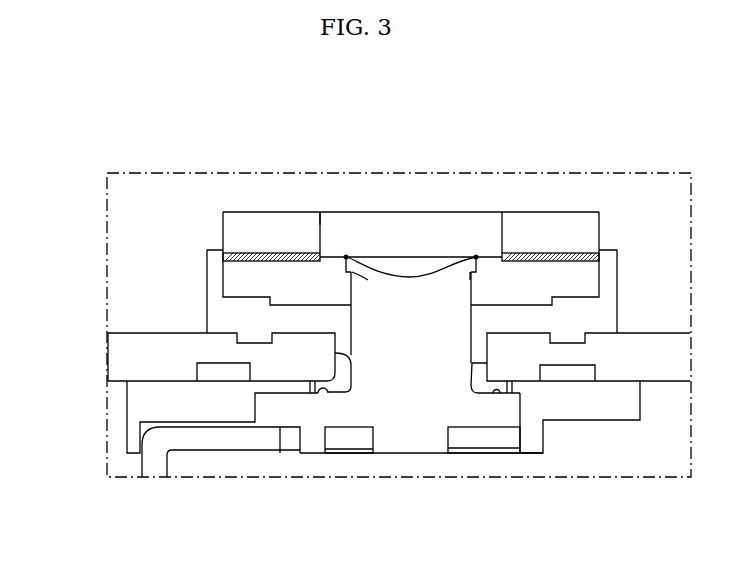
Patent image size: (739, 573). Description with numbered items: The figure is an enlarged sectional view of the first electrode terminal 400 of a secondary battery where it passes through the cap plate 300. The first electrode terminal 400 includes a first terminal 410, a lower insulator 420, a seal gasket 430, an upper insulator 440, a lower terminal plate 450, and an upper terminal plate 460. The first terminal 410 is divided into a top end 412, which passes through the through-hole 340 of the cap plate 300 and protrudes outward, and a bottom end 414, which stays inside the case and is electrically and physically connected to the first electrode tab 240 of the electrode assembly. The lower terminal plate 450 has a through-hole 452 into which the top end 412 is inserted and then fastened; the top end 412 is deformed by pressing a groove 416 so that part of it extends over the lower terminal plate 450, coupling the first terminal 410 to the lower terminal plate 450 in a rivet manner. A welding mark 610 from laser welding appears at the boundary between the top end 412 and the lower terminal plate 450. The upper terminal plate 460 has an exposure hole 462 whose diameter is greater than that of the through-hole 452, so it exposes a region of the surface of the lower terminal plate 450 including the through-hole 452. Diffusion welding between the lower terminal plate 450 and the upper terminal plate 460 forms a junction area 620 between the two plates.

The first electrode terminal 400 is at (203, 242).
The first terminal 410 is at (542, 119).
The top end 412 is at (445, 283).
The bottom end 414 is at (415, 417).
The groove 416 is at (420, 275).
The lower insulator 420 is at (137, 402).
The seal gasket 430 is at (342, 383).
The upper insulator 440 is at (215, 308).
The lower terminal plate 450 is at (232, 278).
The through-hole 452 is at (376, 270).
The upper terminal plate 460 is at (233, 218).
The exposure hole 462 is at (322, 225).
The welding mark 610 is at (347, 257).
The junction area 620 is at (279, 254).
The cap plate 300 is at (122, 355).
The through-hole 340 is at (343, 353).
The first electrode tab 240 is at (148, 465).